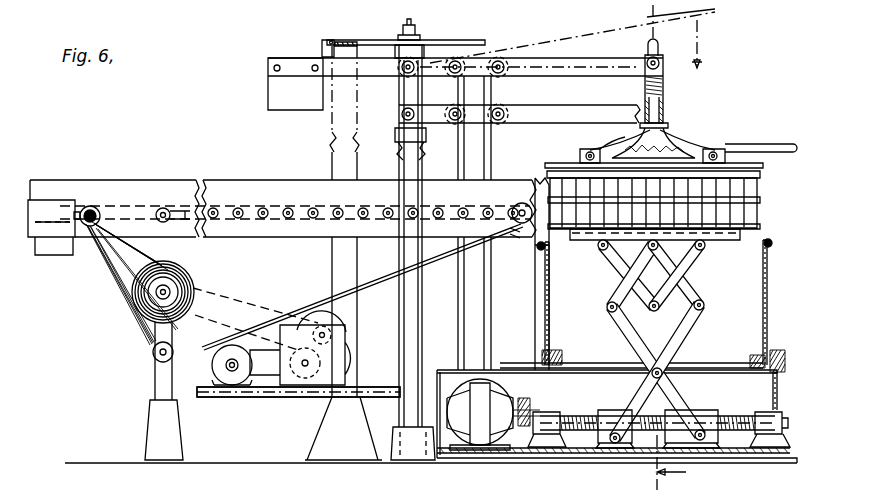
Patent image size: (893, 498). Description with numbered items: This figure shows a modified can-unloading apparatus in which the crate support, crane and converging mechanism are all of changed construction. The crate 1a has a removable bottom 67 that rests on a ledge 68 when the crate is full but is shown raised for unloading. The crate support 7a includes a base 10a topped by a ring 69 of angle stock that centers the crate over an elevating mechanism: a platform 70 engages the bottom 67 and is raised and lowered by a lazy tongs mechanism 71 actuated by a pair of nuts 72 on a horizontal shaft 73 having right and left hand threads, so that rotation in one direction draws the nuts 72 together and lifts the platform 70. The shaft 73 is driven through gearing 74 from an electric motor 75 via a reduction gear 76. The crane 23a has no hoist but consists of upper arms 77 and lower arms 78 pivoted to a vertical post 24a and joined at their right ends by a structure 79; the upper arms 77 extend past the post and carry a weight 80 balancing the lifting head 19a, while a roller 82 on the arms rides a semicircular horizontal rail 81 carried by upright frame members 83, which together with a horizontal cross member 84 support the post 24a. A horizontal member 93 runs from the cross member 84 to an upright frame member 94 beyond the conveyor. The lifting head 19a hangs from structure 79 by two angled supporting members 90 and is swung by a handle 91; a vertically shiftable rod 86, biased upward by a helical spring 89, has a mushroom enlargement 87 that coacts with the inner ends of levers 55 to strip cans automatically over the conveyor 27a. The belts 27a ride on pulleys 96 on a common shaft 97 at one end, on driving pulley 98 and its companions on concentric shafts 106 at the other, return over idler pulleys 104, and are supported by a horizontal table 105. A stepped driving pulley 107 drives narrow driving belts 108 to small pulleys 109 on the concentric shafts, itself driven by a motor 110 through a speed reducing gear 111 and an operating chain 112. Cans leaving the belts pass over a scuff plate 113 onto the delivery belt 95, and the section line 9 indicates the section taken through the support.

The crate 1a is at (767, 322).
The crate support 7a is at (783, 366).
The section line 9 is at (681, 246).
The base 10a is at (777, 406).
The lifting head 19a is at (749, 163).
The crane 23a is at (547, 52).
The vertical post 24a is at (400, 148).
The conveyor belts 27a is at (493, 203).
The levers 55 is at (692, 150).
The removable bottom 67 is at (749, 238).
The ledge 68 is at (758, 357).
The ring 69 is at (556, 346).
The platform 70 is at (583, 240).
The lazy tongs mechanism 71 is at (609, 296).
The nuts 72 is at (614, 410).
The horizontal shaft 73 is at (592, 440).
The gearing 74 is at (529, 430).
The electric motor 75 is at (500, 396).
The reduction gear 76 is at (479, 425).
The upper arms 77 is at (630, 60).
The lower arms 78 is at (570, 112).
The structure 79 is at (665, 93).
The weight 80 is at (268, 91).
The semicircular horizontal rail 81 is at (352, 70).
The roller 82 is at (322, 48).
The upright frame members 83 is at (340, 143).
The horizontal cross member 84 is at (485, 40).
The vertically shiftable rod 86 is at (659, 48).
The mushroom enlargement 87 is at (666, 132).
The helical spring 89 is at (644, 86).
The angled supporting members 90 is at (600, 149).
The handle 91 is at (794, 144).
The horizontal member 93 is at (418, 31).
The upright frame member 94 is at (413, 245).
The delivery belt 95 is at (48, 200).
The pulleys 96 is at (512, 238).
The common shaft 97 is at (513, 216).
The driving pulley 98 is at (108, 268).
The idler pulleys 104 is at (152, 356).
The horizontal table 105 is at (276, 237).
The concentric shafts 106 is at (97, 212).
The stepped driving pulley 107 is at (187, 275).
The narrow driving belts 108 is at (130, 302).
The small pulleys 109 is at (90, 210).
The motor 110 is at (221, 372).
The speed reducing gear 111 is at (346, 338).
The operating chain 112 is at (248, 308).
The scuff plate 113 is at (82, 205).